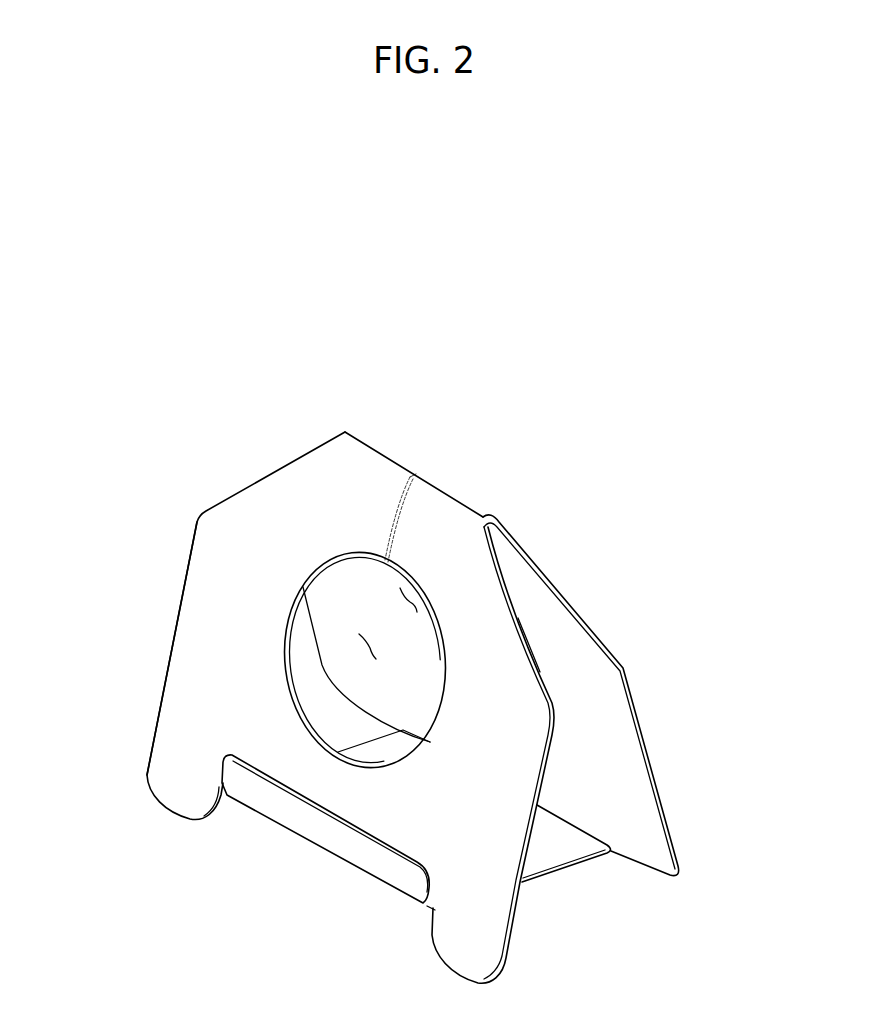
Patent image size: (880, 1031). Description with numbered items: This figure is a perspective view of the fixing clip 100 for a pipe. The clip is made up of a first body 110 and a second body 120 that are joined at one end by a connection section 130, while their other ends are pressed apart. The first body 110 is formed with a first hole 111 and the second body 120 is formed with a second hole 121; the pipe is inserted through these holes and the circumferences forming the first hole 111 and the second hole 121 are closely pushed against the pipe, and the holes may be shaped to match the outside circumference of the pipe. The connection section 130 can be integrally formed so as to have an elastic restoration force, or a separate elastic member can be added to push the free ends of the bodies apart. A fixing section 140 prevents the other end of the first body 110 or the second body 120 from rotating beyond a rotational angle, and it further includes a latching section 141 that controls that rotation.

The fixing clip 100 is at (238, 407).
The first body 110 is at (607, 678).
The first hole 111 is at (420, 593).
The second body 120 is at (195, 650).
The second hole 121 is at (368, 648).
The connection section 130 is at (442, 512).
The fixing section 140 is at (550, 847).
The latching section 141 is at (367, 855).